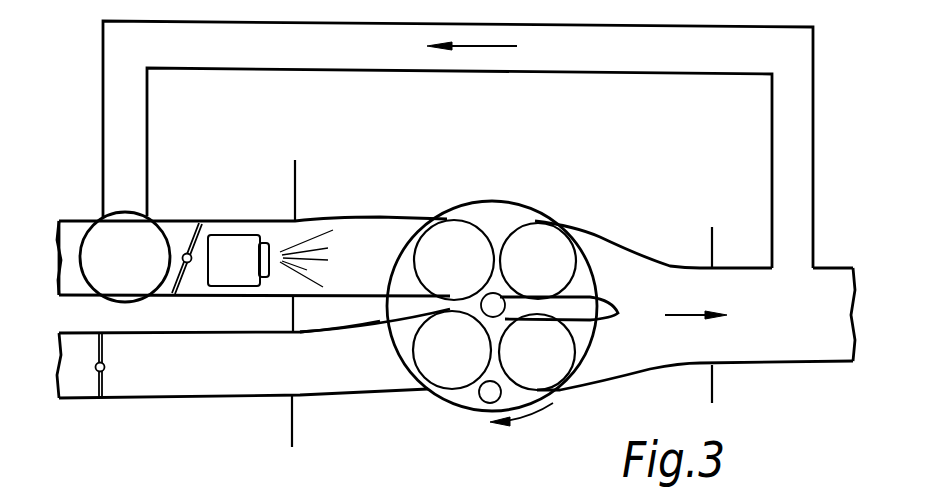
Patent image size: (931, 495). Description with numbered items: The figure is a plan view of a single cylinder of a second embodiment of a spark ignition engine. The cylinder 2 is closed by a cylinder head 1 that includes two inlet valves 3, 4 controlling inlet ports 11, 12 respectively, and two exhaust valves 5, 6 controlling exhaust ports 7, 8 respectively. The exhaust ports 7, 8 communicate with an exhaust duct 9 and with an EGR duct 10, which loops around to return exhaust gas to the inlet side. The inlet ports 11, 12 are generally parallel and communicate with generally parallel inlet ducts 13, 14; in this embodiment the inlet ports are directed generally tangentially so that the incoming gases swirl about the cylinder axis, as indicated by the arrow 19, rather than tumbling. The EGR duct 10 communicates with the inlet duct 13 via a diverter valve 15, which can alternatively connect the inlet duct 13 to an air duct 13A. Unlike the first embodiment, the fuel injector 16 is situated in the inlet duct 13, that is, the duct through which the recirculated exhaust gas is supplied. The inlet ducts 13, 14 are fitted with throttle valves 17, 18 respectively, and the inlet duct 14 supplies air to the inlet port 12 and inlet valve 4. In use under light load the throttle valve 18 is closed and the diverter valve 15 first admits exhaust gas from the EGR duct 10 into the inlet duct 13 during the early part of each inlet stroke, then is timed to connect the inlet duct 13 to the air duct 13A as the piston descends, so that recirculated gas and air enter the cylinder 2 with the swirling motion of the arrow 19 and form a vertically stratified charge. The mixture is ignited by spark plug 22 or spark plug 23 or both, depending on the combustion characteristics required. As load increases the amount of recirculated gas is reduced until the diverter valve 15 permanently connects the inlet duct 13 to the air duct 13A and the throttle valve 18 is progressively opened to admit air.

The cylinder head 1 is at (320, 312).
The cylinder 2 is at (450, 402).
The inlet valve 3 is at (463, 237).
The inlet valve 4 is at (437, 358).
The exhaust valve 5 is at (542, 252).
The exhaust valve 6 is at (550, 362).
The exhaust port 7 is at (617, 265).
The exhaust port 8 is at (637, 352).
The exhaust duct 9 is at (803, 328).
The EGR duct 10 is at (772, 196).
The inlet port 11 is at (375, 238).
The inlet port 12 is at (346, 372).
The inlet duct 13 is at (176, 240).
The air duct 13A is at (72, 270).
The inlet duct 14 is at (218, 373).
The diverter valve 15 is at (95, 245).
The fuel injector 16 is at (237, 245).
The throttle valve 17 is at (176, 288).
The throttle valve 18 is at (98, 378).
The arrow 19 is at (538, 413).
The spark plug 22 is at (497, 293).
The spark plug 23 is at (488, 403).